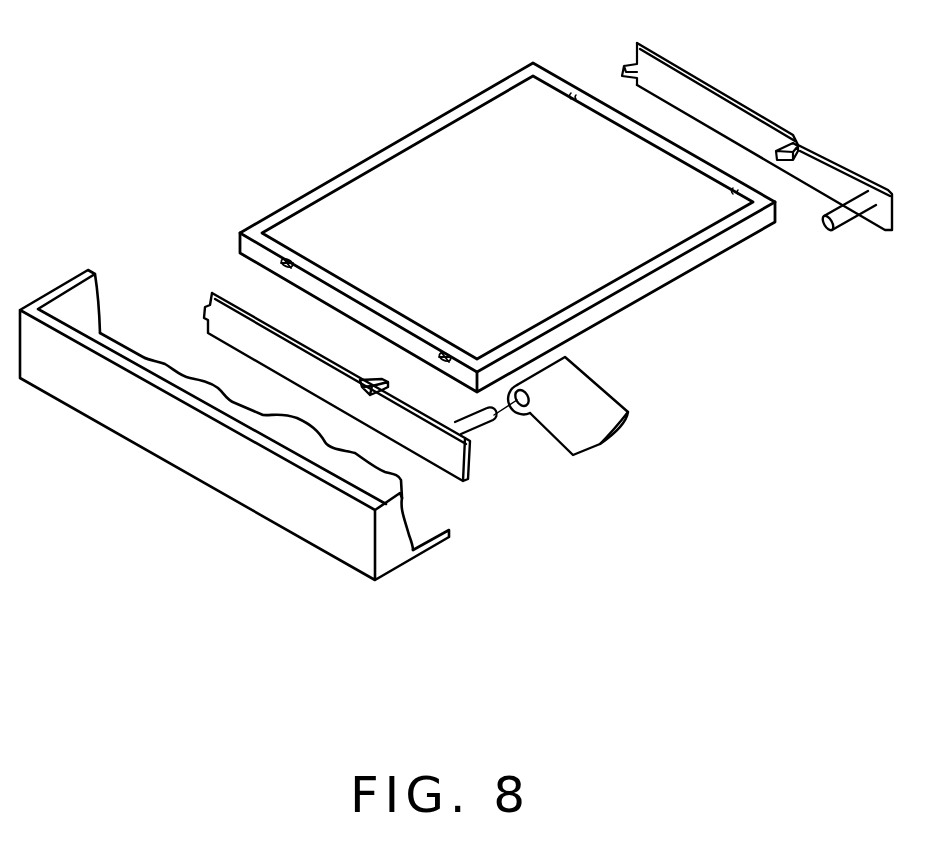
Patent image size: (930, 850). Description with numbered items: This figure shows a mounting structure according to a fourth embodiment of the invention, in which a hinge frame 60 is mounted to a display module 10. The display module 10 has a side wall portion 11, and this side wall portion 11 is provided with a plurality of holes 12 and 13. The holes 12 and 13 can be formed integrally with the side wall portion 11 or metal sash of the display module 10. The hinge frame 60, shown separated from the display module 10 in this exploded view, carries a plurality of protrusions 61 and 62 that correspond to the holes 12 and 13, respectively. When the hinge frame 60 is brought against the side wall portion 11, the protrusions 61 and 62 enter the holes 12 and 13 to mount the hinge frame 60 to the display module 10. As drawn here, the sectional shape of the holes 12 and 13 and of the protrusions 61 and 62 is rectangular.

The display module 10 is at (636, 242).
The side wall portion 11 is at (493, 393).
The hole 12 is at (280, 263).
The hole 13 is at (439, 357).
The hinge frame 60 is at (733, 86).
The protrusion 61 is at (626, 66).
The protrusion 62 is at (791, 147).